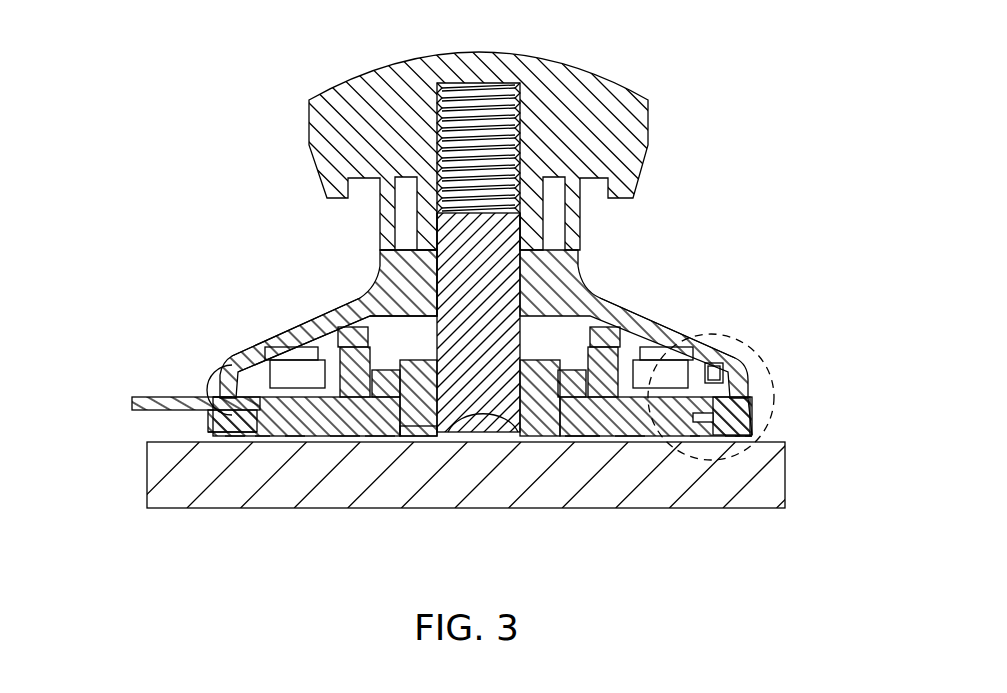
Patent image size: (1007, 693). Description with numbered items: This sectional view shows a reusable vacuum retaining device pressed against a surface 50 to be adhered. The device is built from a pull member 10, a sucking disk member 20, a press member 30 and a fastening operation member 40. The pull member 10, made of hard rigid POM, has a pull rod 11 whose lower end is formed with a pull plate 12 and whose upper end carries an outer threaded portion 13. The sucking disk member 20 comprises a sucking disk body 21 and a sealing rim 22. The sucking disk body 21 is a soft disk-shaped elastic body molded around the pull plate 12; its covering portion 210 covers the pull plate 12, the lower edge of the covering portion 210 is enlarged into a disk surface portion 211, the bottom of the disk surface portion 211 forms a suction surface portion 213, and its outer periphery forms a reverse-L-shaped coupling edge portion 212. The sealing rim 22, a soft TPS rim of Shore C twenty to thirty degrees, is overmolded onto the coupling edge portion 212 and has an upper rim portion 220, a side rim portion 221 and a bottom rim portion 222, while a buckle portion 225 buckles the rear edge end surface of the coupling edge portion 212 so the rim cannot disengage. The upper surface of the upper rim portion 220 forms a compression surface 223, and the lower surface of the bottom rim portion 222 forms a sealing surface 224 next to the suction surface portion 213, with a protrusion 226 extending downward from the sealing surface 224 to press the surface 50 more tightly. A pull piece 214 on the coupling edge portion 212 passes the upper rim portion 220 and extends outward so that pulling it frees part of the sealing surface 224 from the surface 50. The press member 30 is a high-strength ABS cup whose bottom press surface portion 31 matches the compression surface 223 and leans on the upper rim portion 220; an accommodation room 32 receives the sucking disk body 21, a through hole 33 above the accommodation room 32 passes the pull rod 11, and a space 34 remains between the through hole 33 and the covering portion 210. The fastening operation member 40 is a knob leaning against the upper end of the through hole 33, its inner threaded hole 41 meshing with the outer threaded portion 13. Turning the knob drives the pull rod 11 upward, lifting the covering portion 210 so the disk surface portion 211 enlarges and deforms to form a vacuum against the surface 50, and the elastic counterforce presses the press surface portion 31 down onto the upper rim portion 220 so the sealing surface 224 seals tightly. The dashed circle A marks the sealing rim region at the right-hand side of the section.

The pull member 10 is at (428, 330).
The pull rod 11 is at (443, 250).
The pull plate 12 is at (434, 422).
The outer threaded portion 13 is at (520, 228).
The sucking disk member 20 is at (580, 360).
The sucking disk body 21 is at (600, 338).
The covering portion 210 is at (283, 302).
The disk surface portion 211 is at (383, 425).
The coupling edge portion 212 is at (218, 383).
The suction surface portion 213 is at (355, 428).
The pull piece 214 is at (132, 403).
The sealing rim 22 is at (200, 417).
The upper rim portion 220 is at (232, 358).
The side rim portion 221 is at (218, 431).
The bottom rim portion 222 is at (262, 432).
The compression surface 223 is at (750, 390).
The sealing surface 224 is at (295, 432).
The buckle portion 225 is at (672, 432).
The protrusion 226 is at (233, 437).
The press member 30 is at (242, 323).
The press surface portion 31 is at (207, 393).
The accommodation room 32 is at (385, 433).
The through hole 33 is at (420, 243).
The space 34 is at (387, 290).
The fastening operation member 40 is at (533, 60).
The inner threaded hole 41 is at (520, 132).
The surface 50 is at (180, 445).
The region A is at (728, 335).